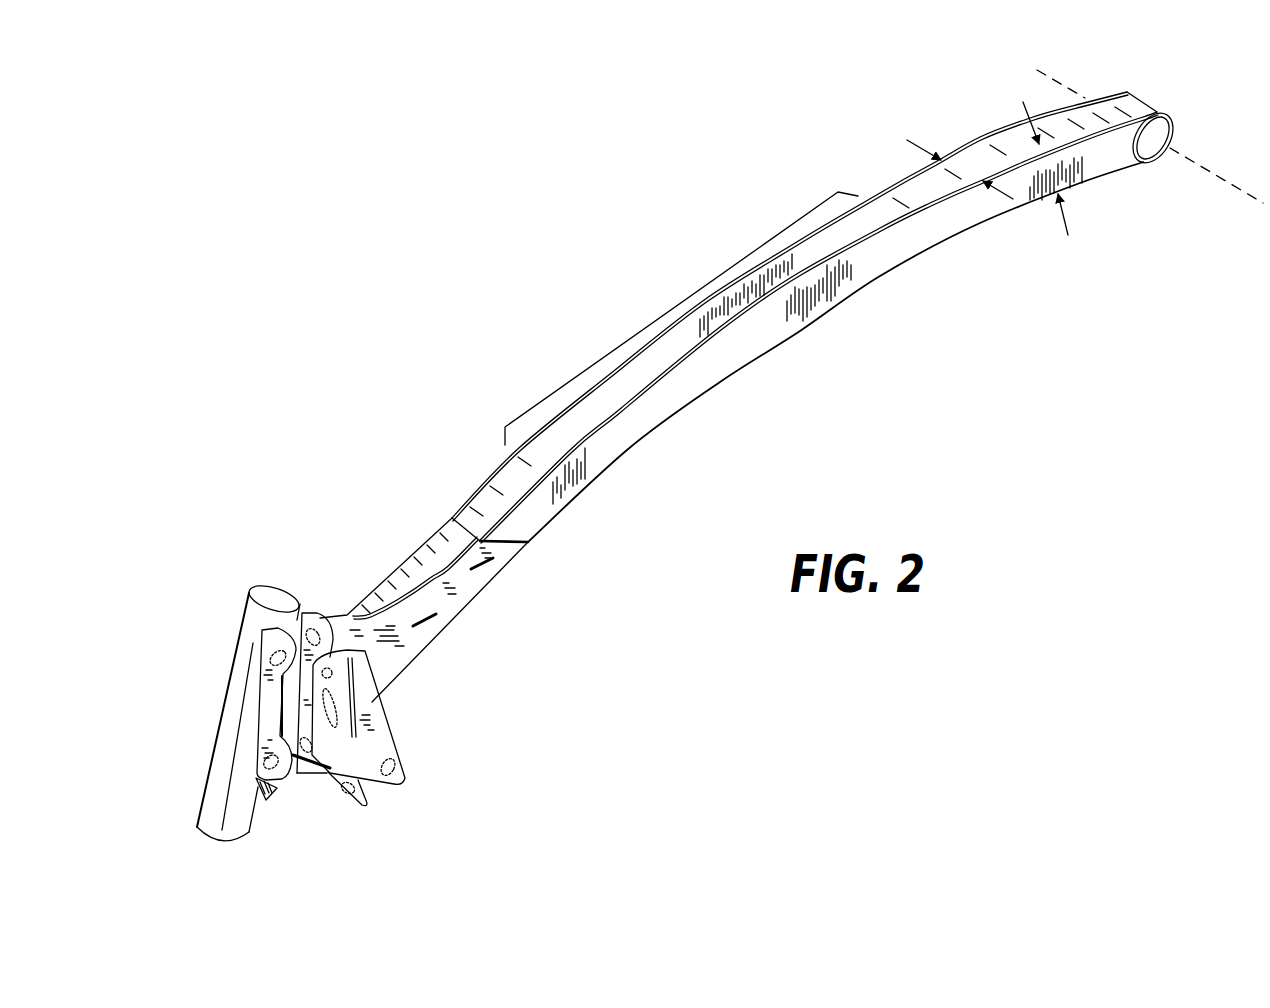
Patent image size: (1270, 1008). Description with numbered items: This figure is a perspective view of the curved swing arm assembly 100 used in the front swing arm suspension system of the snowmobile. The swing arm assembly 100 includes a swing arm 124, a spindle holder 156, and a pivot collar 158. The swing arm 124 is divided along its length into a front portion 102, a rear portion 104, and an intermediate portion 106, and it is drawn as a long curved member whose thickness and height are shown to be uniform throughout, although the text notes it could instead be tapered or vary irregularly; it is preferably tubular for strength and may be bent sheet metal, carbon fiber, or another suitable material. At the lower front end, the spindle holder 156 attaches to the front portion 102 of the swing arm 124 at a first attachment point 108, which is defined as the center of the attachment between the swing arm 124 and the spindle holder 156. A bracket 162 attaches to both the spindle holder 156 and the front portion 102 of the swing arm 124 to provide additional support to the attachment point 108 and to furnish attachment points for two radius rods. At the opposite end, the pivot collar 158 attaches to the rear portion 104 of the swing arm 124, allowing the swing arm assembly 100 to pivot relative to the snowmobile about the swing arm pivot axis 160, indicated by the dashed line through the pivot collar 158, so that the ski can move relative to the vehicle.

The swing arm assembly 100 is at (730, 181).
The front portion 102 is at (386, 557).
The rear portion 104 is at (1090, 80).
The intermediate portion 106 is at (663, 315).
The first attachment point 108 is at (268, 790).
The swing arm 124 is at (750, 347).
The spindle holder 156 is at (235, 723).
The pivot collar 158 is at (1163, 150).
The swing arm pivot axis 160 is at (1218, 175).
The bracket 162 is at (373, 717).